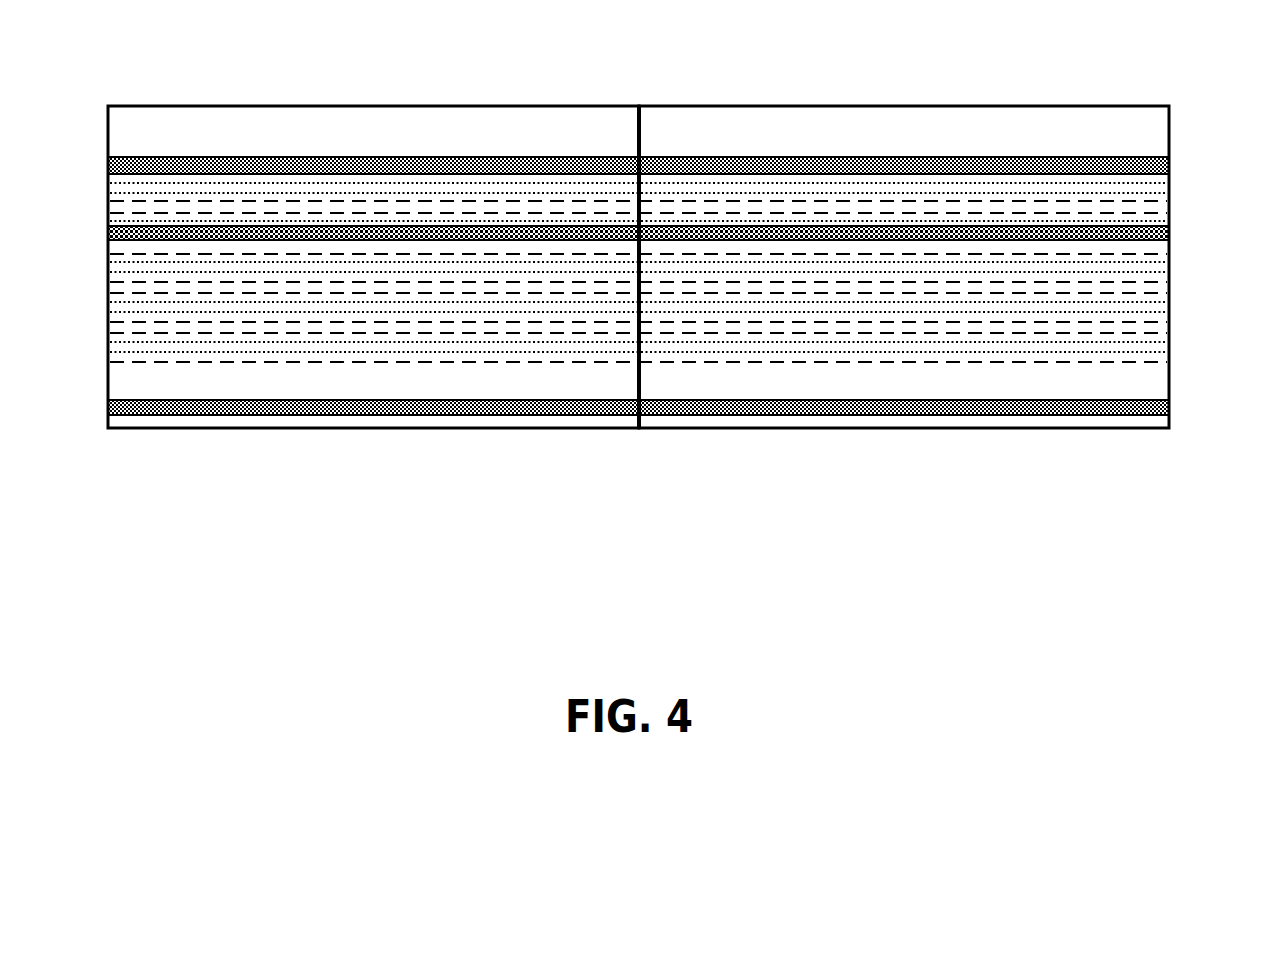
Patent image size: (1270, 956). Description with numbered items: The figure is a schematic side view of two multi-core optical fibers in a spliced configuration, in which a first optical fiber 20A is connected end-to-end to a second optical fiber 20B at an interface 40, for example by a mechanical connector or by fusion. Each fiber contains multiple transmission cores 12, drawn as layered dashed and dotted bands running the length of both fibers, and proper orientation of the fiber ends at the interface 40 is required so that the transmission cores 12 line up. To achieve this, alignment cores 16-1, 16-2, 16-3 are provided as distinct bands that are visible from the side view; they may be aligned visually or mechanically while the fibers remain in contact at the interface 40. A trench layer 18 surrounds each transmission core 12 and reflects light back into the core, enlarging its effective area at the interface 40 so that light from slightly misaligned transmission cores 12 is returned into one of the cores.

The first optical fiber 20A is at (188, 86).
The second optical fiber 20B is at (1092, 86).
The alignment core 16-2 is at (108, 160).
The alignment core 16-1 is at (108, 232).
The trench layer 18 is at (108, 298).
The transmission core 12 is at (108, 306).
The alignment core 16-3 is at (108, 405).
The interface 40 is at (640, 440).